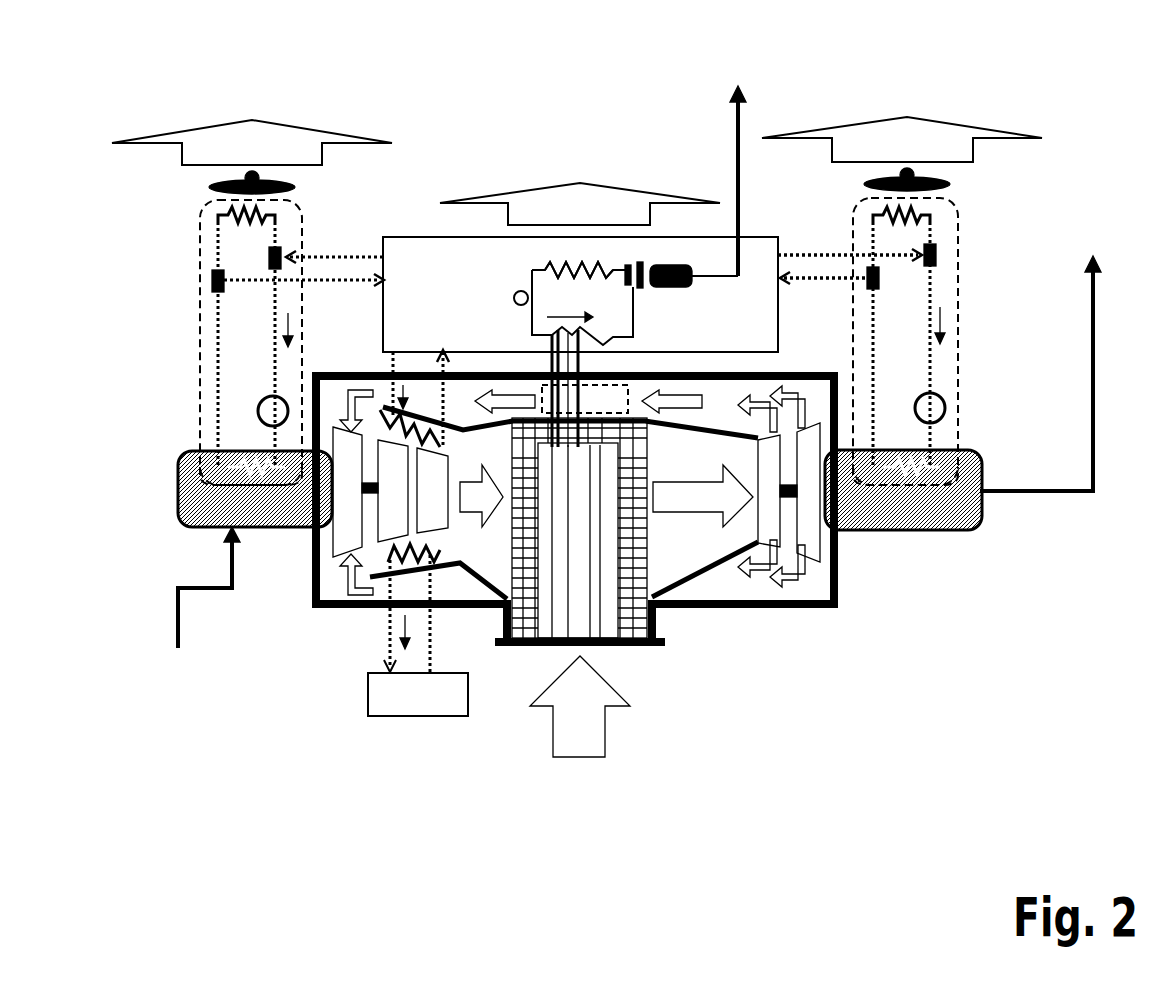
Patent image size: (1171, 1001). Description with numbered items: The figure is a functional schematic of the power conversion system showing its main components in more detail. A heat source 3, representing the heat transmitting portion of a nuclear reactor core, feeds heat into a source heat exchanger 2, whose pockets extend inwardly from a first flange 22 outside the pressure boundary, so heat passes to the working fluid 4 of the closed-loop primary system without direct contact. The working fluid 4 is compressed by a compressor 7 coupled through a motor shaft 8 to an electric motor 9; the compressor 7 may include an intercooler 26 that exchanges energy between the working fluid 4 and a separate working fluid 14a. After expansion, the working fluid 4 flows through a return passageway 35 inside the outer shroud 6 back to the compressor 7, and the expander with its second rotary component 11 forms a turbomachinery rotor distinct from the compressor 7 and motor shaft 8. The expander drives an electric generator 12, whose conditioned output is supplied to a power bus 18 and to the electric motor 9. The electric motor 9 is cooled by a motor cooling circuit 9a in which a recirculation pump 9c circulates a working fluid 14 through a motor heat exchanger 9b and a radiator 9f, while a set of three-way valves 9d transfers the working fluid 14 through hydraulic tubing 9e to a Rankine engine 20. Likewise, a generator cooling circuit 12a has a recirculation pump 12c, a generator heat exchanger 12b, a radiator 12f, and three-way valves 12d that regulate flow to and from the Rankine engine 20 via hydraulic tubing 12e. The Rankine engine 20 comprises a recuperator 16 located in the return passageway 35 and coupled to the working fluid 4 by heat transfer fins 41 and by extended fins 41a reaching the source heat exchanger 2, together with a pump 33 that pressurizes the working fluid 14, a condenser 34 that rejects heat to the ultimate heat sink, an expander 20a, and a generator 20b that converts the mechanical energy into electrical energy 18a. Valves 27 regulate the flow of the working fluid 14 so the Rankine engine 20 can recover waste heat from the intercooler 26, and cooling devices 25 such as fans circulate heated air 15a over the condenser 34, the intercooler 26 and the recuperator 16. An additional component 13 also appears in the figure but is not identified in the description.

The source heat exchanger 2 is at (645, 557).
The heat source 3 is at (583, 732).
The working fluid 4 is at (482, 500).
The outer shroud 6 is at (792, 508).
The compressor 7 is at (372, 492).
The motor shaft 8 is at (340, 512).
The electric motor 9 is at (193, 503).
The motor cooling circuit 9a is at (200, 215).
The motor heat exchanger 9b is at (215, 450).
The recirculation pump 9c is at (262, 403).
The three-way valves 9d is at (213, 280).
The hydraulic tubing 9e is at (357, 277).
The radiator 9f is at (247, 180).
The second rotary component 11 is at (840, 598).
The electric generator 12 is at (978, 531).
The generator cooling circuit 12a is at (960, 233).
The generator heat exchanger 12b is at (898, 475).
The recirculation pump 12c is at (945, 405).
The three-way valves 12d is at (882, 277).
The hydraulic tubing 12e is at (817, 253).
The radiator 12f is at (920, 208).
The power input 13 is at (178, 648).
The working fluid 14 is at (398, 398).
The working fluid 14a is at (390, 622).
The heated air 15a is at (292, 143).
The recuperator 16 is at (603, 335).
The power bus 18 is at (1064, 350).
The electrical energy 18a is at (735, 163).
The Rankine engine 20 is at (422, 250).
The expander 20a is at (643, 263).
The generator 20b is at (685, 287).
The first flange 22 is at (658, 648).
The cooling devices 25 is at (243, 210).
The intercooler 26 is at (403, 555).
The valves 27 is at (445, 705).
The pump 33 is at (553, 337).
The condenser 34 is at (593, 265).
The return passageway 35 is at (605, 445).
The heat transfer fins 41 is at (550, 363).
The extended fins 41a is at (558, 445).